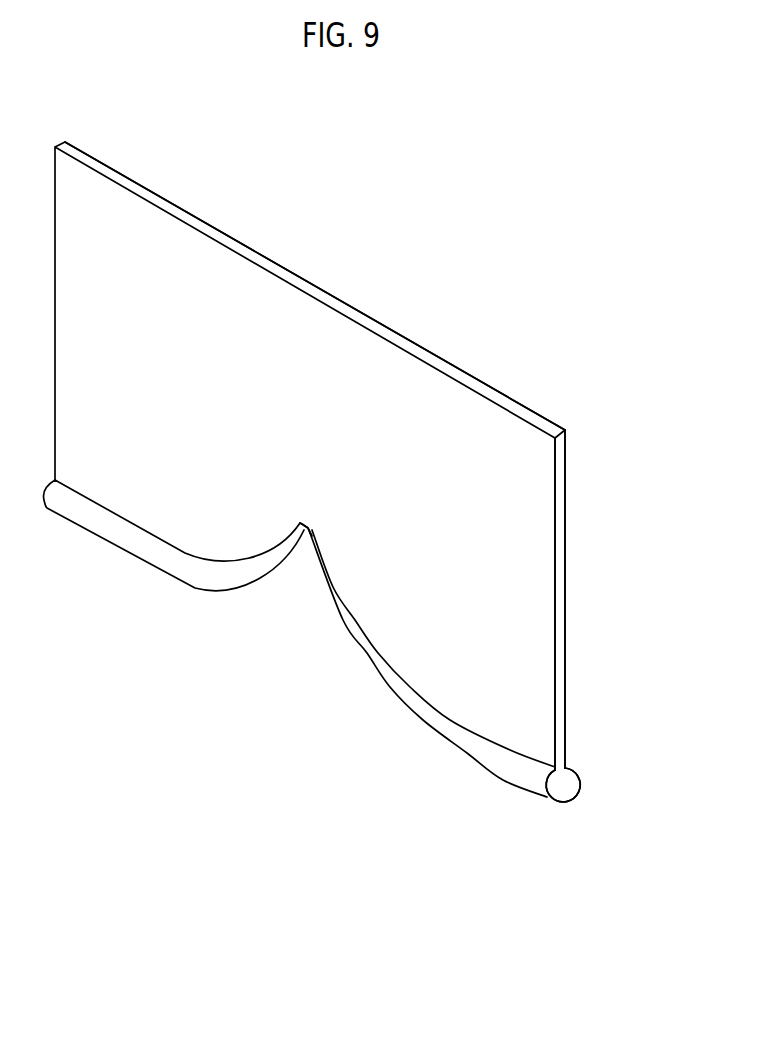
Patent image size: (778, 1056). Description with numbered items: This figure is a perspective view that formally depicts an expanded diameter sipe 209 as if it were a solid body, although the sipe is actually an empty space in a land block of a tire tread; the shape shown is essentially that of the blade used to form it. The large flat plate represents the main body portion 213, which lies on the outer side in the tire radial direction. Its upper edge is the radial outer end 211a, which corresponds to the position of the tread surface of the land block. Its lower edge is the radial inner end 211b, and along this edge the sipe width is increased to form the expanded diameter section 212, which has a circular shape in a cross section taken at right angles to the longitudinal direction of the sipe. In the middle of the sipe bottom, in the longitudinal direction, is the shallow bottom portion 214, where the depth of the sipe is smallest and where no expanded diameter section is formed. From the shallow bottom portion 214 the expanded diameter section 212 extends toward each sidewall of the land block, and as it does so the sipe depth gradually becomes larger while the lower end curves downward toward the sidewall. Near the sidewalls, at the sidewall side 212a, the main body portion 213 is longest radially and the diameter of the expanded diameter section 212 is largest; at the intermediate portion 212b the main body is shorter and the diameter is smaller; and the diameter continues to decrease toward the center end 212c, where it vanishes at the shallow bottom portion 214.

The expanded diameter sipe 209 is at (455, 270).
The radial outer end 211a is at (538, 413).
The radial inner end 211b is at (512, 787).
The expanded diameter section 212 is at (571, 787).
The sidewall side 212a is at (555, 797).
The intermediate portion 212b is at (437, 722).
The center end 212c is at (318, 565).
The main body portion 213 is at (564, 574).
The shallow bottom portion 214 is at (300, 523).